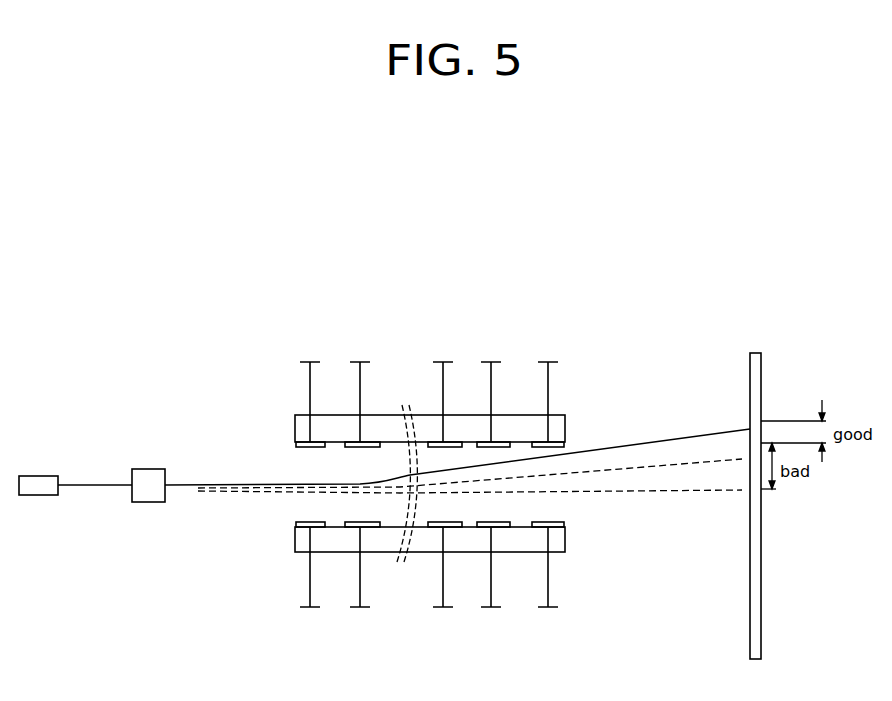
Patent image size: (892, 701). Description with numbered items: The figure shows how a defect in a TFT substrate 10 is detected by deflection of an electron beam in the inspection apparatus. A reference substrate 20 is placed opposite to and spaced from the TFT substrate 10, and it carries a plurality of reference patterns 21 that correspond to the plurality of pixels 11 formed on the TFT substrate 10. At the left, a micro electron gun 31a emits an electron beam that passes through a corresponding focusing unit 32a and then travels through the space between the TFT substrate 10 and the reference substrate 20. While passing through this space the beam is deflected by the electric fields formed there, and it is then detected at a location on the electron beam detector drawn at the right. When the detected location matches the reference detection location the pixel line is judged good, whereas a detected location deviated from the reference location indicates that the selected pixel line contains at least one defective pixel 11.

The TFT substrate 10 is at (295, 540).
The pixel 11 is at (296, 522).
The reference substrate 20 is at (295, 430).
The reference pattern 21 is at (296, 447).
The micro electron gun 31a is at (38, 497).
The focusing unit 32a is at (150, 503).